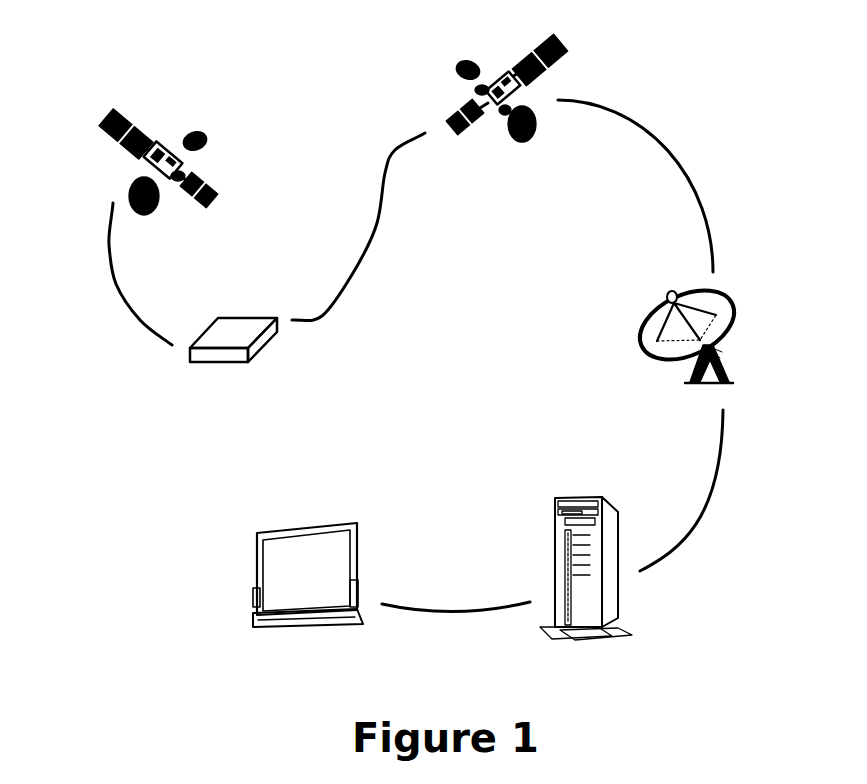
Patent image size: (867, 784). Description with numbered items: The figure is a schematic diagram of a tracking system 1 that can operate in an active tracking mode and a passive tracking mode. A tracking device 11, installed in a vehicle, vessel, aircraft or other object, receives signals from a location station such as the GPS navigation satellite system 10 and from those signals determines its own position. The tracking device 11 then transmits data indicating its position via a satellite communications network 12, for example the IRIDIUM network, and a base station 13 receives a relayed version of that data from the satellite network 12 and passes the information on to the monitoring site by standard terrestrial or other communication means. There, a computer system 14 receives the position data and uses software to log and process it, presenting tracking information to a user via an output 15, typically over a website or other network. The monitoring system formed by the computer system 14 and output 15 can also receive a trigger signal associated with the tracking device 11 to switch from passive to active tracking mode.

The tracking system 1 is at (698, 110).
The GPS navigation satellite system 10 is at (132, 170).
The tracking device 11 is at (188, 364).
The satellite communications network 12 is at (537, 142).
The base station 13 is at (735, 328).
The computer system 14 is at (625, 590).
The output 15 is at (252, 556).